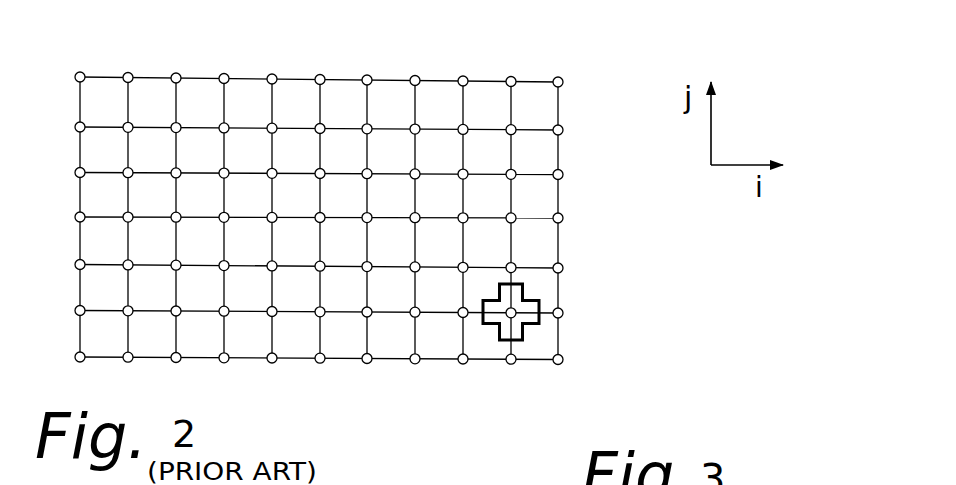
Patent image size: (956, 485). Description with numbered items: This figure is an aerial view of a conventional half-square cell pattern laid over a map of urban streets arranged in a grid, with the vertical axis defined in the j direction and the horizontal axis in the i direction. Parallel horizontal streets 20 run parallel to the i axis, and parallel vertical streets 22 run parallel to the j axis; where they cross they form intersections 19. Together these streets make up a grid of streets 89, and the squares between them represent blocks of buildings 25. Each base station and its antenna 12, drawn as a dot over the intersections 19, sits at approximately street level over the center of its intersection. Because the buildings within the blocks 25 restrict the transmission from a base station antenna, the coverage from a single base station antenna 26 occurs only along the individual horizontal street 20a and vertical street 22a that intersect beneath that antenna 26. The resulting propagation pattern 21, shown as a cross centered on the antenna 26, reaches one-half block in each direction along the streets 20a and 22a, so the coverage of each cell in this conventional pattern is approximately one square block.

The base station and its antenna 12 is at (262, 114).
The intersections 19 is at (282, 202).
The horizontal streets 20 is at (533, 127).
The horizontal street 20a is at (543, 310).
The propagation pattern 21 is at (528, 299).
The vertical streets 22 is at (221, 329).
The vertical street 22a is at (518, 349).
The blocks of buildings 25 is at (531, 203).
The base station antenna 26 is at (500, 321).
The grid of streets 89 is at (372, 396).